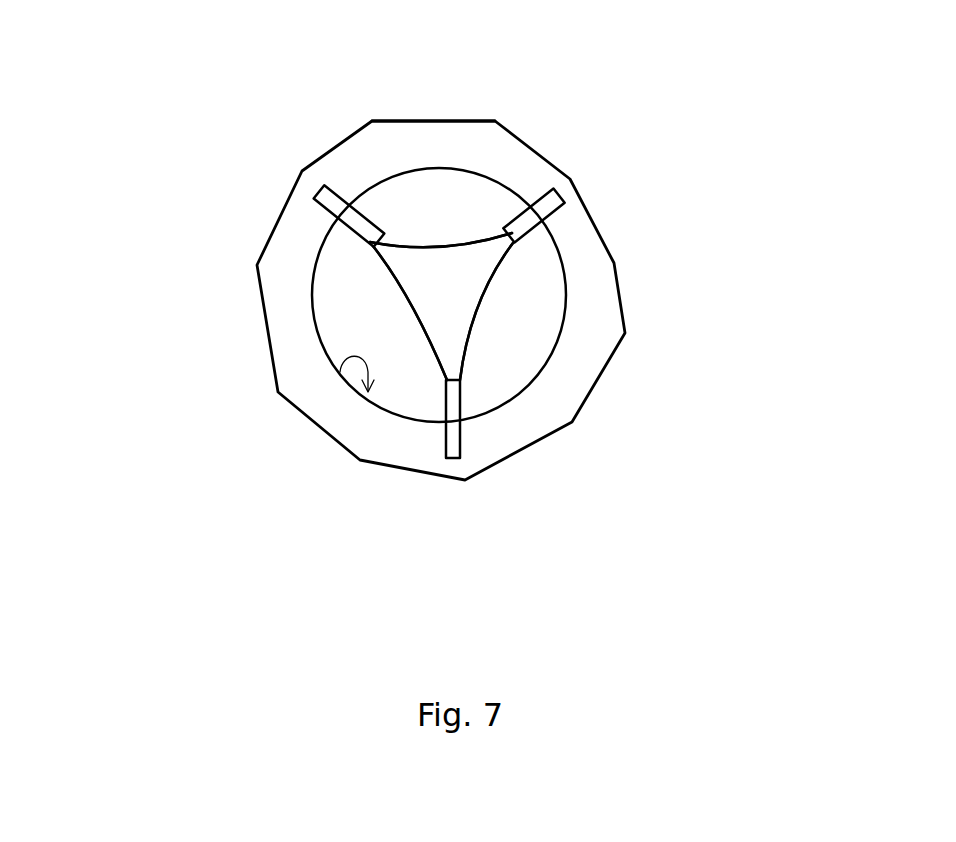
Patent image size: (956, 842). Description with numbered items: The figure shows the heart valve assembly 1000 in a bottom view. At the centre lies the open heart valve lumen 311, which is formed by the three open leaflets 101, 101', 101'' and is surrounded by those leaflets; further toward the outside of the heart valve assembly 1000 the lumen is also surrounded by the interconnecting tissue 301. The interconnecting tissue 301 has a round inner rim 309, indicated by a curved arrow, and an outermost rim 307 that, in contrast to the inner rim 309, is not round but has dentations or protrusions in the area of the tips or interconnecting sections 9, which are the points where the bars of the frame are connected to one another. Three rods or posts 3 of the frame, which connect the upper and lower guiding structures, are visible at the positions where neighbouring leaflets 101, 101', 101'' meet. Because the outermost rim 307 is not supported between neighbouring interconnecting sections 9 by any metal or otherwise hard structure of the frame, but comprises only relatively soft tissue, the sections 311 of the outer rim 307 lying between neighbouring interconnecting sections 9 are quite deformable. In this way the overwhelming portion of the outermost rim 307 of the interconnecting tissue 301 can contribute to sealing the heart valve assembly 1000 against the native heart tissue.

The heart valve assembly 1000 is at (438, 300).
The outermost rim 307 is at (444, 118).
The open heart valve lumen 311 is at (466, 283).
The interconnecting tissue 301 is at (287, 319).
The posts 3 is at (330, 203).
The interconnecting sections 9 is at (372, 121).
The leaflet 101 is at (495, 311).
The leaflet 101' is at (395, 313).
The leaflet 101'' is at (441, 219).
The inner rim 309 is at (340, 370).